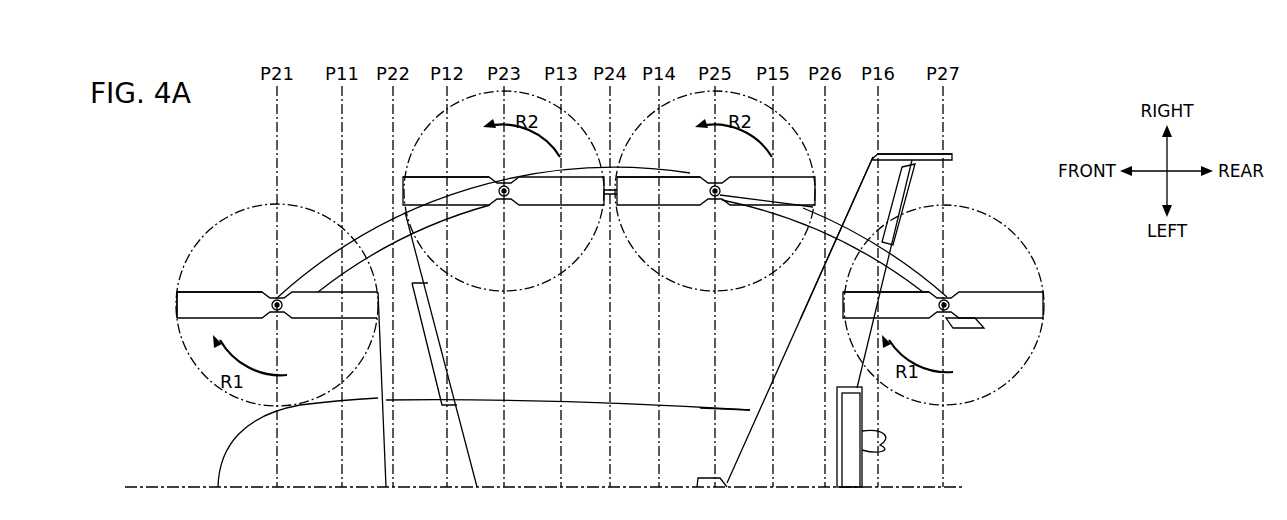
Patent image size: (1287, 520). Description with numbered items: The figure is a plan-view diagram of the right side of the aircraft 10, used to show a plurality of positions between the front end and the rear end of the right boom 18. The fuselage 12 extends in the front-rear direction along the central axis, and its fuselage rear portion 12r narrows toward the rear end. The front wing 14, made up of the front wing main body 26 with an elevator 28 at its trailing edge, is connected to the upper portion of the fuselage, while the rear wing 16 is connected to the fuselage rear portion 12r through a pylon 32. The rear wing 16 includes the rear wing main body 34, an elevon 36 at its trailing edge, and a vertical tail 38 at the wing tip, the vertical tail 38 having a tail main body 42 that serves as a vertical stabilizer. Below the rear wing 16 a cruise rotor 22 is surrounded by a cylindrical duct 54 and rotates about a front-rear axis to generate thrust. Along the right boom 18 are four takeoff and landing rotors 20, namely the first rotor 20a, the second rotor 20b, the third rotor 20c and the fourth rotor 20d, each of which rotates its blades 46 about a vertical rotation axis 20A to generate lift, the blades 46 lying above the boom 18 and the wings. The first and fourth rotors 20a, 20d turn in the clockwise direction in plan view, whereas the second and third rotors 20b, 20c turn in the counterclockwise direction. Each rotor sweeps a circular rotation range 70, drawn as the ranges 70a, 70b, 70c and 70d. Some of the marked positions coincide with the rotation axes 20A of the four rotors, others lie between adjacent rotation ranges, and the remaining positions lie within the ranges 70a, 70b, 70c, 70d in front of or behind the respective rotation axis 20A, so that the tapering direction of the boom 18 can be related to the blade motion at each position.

The aircraft 10 is at (153, 185).
The fuselage 12 is at (526, 390).
The fuselage rear portion 12r is at (730, 412).
The front wing 14 is at (372, 378).
The rear wing 16 is at (783, 317).
The boom 18 is at (333, 252).
The takeoff and landing rotor 20 is at (610, 283).
The first takeoff and landing rotor 20a is at (188, 281).
The second takeoff and landing rotor 20b is at (537, 214).
The third takeoff and landing rotor 20c is at (683, 215).
The fourth takeoff and landing rotor 20d is at (1026, 328).
The rotation axis 20A is at (275, 299).
The cruise rotor 22 is at (876, 447).
The front wing main body 26 is at (386, 334).
The elevator 28 is at (437, 370).
The pylon 32 is at (708, 480).
The rear wing main body 34 is at (808, 345).
The elevon 36 is at (904, 165).
The vertical tail 38 is at (958, 152).
The tail main body 42 is at (934, 161).
The blade 46 is at (176, 302).
The duct 54 is at (848, 416).
The rotation range 70 is at (587, 268).
The rotation range of the first takeoff and landing rotor 70a is at (196, 368).
The rotation range of the second takeoff and landing rotor 70b is at (578, 268).
The rotation range of the third takeoff and landing rotor 70c is at (650, 268).
The rotation range of the fourth takeoff and landing rotor 70d is at (985, 400).